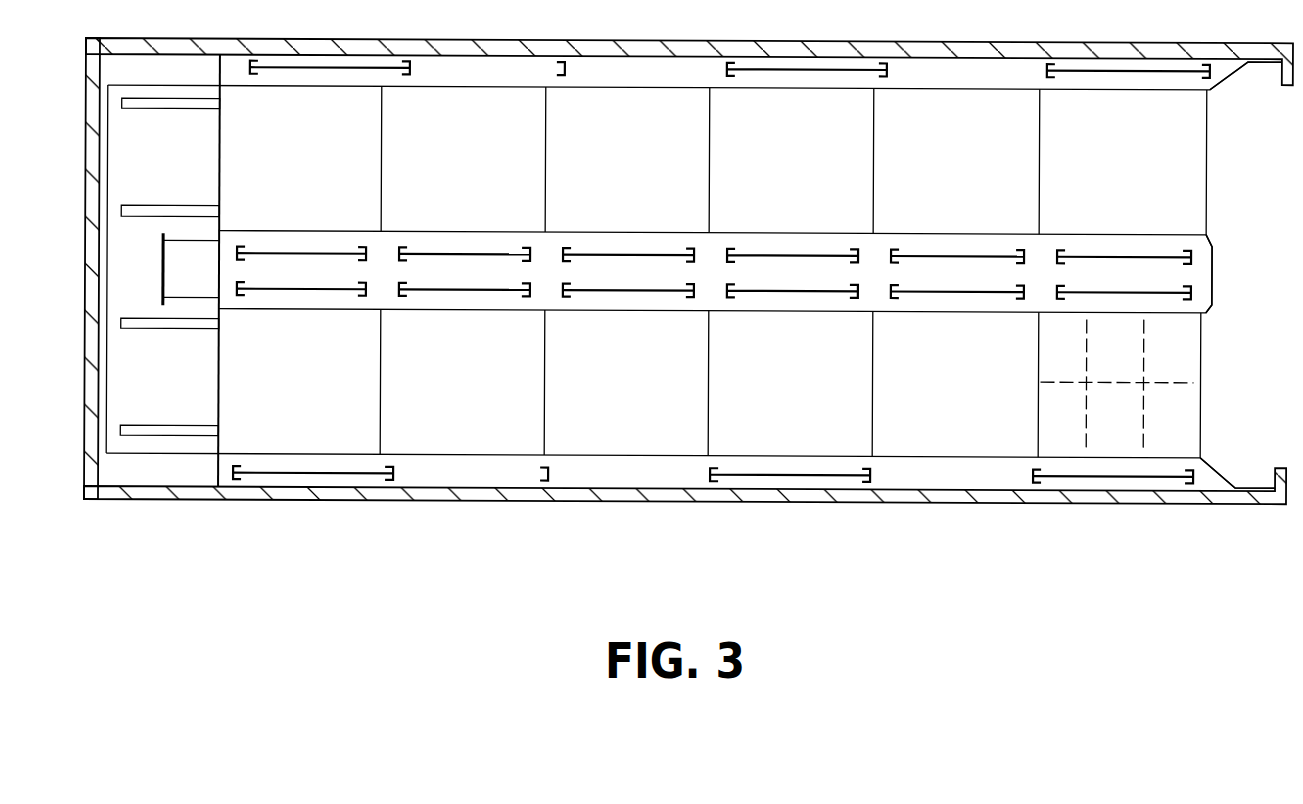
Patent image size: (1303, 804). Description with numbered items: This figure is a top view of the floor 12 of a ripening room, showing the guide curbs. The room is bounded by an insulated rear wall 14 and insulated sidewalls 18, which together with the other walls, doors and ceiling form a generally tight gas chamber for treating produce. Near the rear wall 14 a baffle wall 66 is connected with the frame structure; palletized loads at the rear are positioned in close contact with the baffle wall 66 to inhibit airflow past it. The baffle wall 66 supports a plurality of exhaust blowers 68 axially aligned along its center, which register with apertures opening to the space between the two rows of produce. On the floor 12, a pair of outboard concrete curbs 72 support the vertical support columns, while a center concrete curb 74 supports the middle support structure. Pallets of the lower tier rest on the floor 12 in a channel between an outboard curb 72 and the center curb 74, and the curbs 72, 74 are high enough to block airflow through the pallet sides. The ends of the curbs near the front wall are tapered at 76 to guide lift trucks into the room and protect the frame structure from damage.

The floor 12 is at (1217, 160).
The rear wall 14 is at (87, 268).
The sidewalls 18 is at (525, 5).
The baffle wall 66 is at (218, 387).
The exhaust blowers 68 is at (167, 269).
The outboard concrete curbs 72 is at (1000, 19).
The center concrete curb 74 is at (977, 214).
The tapered ends 76 is at (1227, 85).